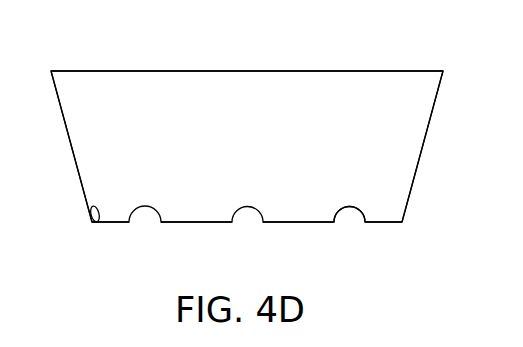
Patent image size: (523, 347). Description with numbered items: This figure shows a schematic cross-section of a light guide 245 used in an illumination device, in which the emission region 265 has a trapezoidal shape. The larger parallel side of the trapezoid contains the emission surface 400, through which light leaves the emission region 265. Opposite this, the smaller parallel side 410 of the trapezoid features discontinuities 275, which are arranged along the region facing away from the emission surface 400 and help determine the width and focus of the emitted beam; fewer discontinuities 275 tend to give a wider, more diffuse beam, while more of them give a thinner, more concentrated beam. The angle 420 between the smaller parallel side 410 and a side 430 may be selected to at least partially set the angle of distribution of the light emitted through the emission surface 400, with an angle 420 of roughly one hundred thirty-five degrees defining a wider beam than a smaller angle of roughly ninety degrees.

The emission region 265 is at (100, 46).
The emission surface 400 is at (277, 70).
The side 430 is at (69, 141).
The light guide 245 is at (403, 146).
The smaller parallel side 410 is at (185, 223).
The angle 420 is at (88, 219).
The discontinuities 275 is at (348, 215).